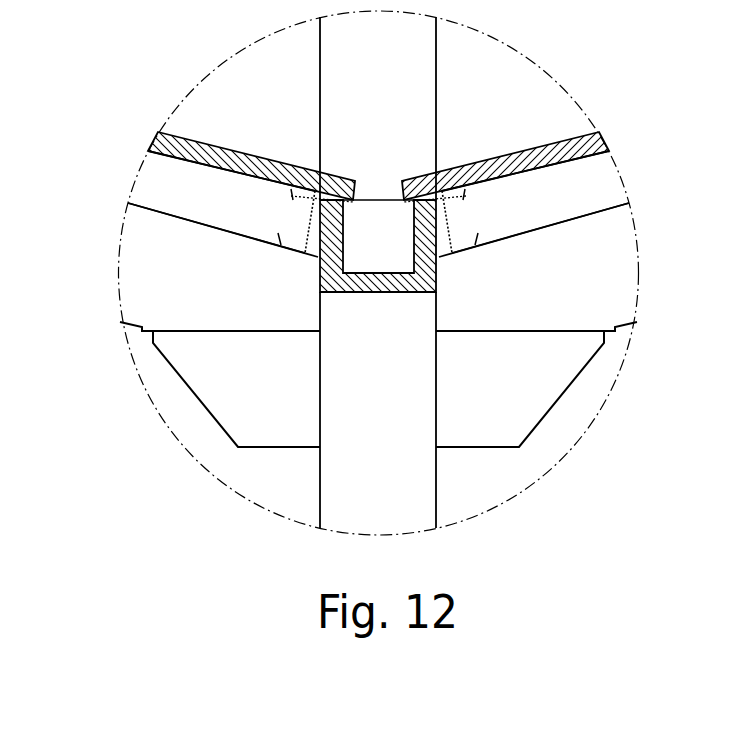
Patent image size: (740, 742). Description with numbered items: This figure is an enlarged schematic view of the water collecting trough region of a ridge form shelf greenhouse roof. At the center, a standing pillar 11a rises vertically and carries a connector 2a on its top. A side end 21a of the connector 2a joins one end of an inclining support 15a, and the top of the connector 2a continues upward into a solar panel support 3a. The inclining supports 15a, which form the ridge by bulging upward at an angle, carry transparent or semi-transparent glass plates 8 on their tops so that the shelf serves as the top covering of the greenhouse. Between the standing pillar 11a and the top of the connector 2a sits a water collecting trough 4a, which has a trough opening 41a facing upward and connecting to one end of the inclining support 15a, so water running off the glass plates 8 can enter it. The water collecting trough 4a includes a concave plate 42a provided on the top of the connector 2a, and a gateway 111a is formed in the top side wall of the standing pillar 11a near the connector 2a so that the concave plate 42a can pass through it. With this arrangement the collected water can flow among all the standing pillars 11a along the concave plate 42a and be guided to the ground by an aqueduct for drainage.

The solar panel support 3a is at (337, 83).
The standing pillar 11a is at (342, 490).
The connector 2a is at (318, 282).
The gateway 111a is at (390, 203).
The trough opening 41a is at (343, 205).
The glass plate 8 is at (533, 152).
The concave plate 42a is at (322, 238).
The water collecting trough 4a is at (423, 233).
The inclining support 15a is at (135, 277).
The side end 21a is at (437, 278).